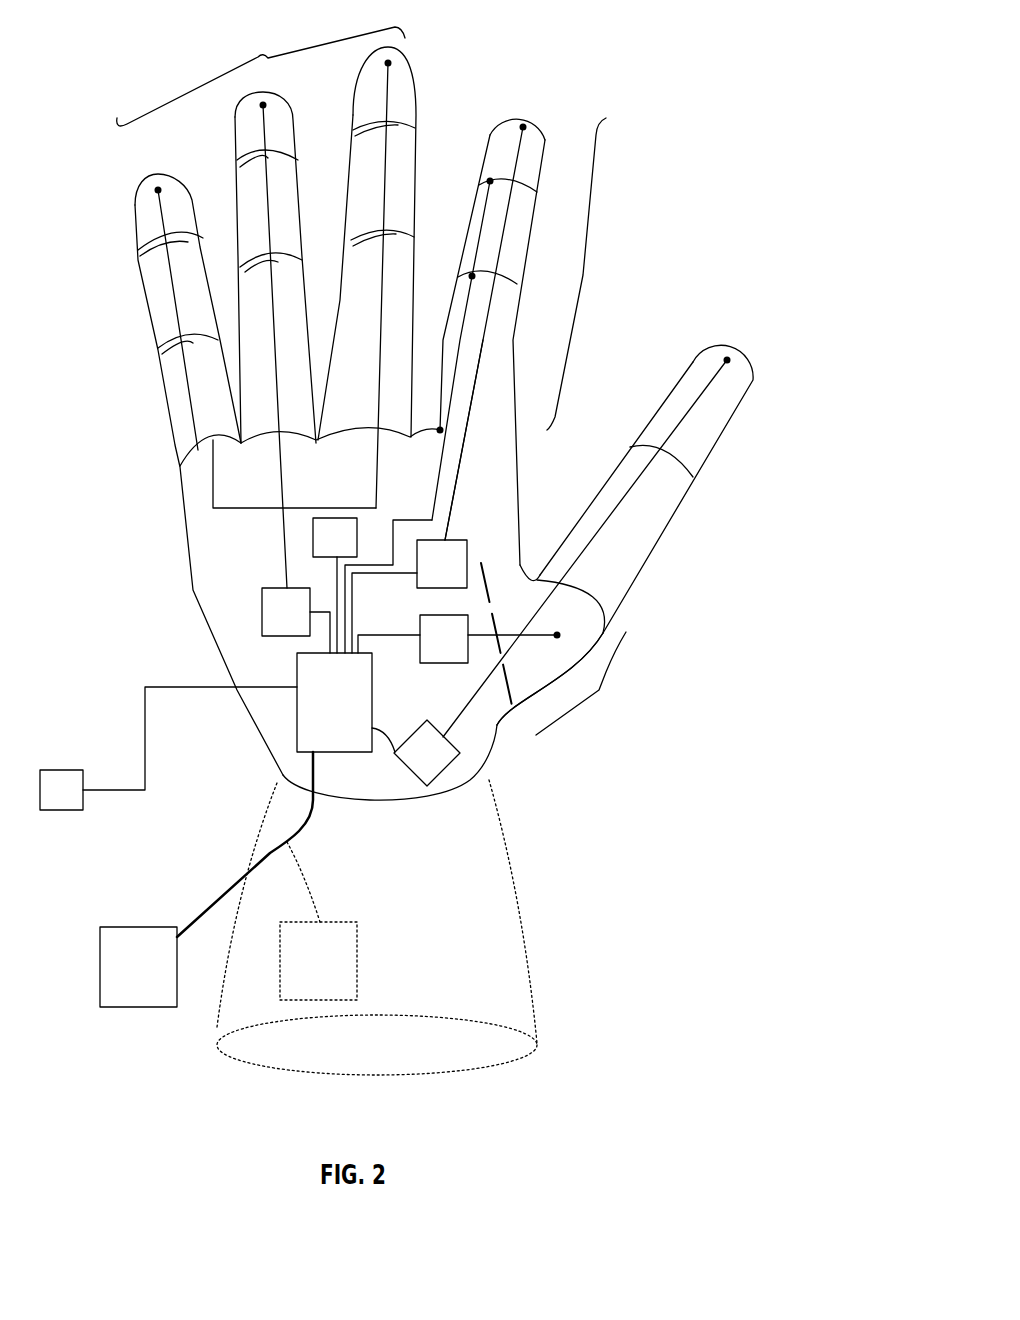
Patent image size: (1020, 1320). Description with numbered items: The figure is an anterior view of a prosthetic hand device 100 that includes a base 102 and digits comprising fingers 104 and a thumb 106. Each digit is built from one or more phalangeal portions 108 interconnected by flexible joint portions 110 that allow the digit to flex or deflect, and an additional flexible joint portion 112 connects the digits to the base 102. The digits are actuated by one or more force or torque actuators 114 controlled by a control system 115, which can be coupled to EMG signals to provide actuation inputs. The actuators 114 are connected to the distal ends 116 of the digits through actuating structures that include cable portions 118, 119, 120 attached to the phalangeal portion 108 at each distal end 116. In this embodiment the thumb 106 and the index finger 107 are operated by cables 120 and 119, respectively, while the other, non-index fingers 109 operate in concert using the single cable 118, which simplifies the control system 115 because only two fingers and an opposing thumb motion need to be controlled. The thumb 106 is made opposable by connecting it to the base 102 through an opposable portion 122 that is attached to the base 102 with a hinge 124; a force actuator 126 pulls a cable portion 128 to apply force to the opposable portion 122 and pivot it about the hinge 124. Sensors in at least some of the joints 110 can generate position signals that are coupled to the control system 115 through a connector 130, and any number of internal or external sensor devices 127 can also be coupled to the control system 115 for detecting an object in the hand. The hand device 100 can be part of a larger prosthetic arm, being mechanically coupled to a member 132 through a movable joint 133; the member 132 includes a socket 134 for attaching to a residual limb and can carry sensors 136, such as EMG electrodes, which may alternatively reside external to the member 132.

The prosthetic hand device 100 is at (718, 912).
The base 102 is at (240, 713).
The fingers 104 is at (584, 281).
The thumb 106 is at (744, 456).
The index finger 107 is at (523, 109).
The phalangeal portions 108 is at (122, 223).
The non-index fingers 109 is at (263, 55).
The flexible joint portions 110 is at (136, 248).
The additional flexible joint portion 112 is at (173, 463).
The force or torque actuators 114 is at (260, 626).
The control system 115 is at (296, 734).
The distal ends 116 is at (164, 176).
The cable portion 118 is at (278, 532).
The cable portion 119 is at (464, 493).
The cable portion 120 is at (591, 554).
The opposable portion 122 is at (599, 690).
The hinge 124 is at (516, 734).
The force actuator 126 is at (451, 612).
The sensor devices 127 is at (312, 546).
The cable portion 128 is at (456, 756).
The connector 130 is at (453, 304).
The member 132 is at (538, 980).
The joint 133 is at (433, 809).
The socket 134 is at (493, 1074).
The sensors 136 is at (155, 979).